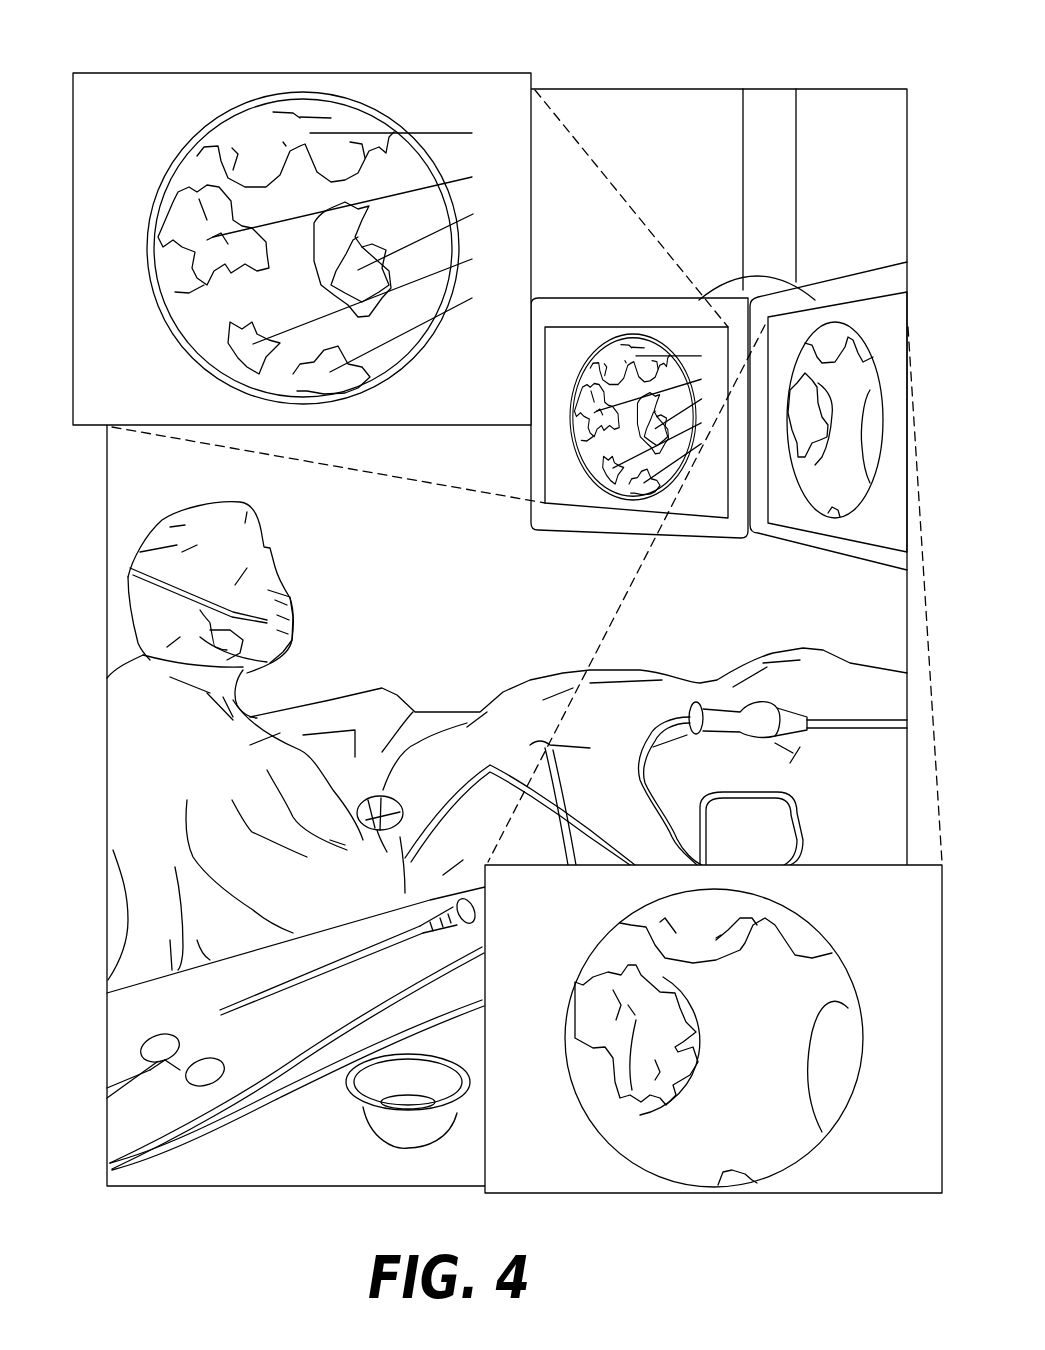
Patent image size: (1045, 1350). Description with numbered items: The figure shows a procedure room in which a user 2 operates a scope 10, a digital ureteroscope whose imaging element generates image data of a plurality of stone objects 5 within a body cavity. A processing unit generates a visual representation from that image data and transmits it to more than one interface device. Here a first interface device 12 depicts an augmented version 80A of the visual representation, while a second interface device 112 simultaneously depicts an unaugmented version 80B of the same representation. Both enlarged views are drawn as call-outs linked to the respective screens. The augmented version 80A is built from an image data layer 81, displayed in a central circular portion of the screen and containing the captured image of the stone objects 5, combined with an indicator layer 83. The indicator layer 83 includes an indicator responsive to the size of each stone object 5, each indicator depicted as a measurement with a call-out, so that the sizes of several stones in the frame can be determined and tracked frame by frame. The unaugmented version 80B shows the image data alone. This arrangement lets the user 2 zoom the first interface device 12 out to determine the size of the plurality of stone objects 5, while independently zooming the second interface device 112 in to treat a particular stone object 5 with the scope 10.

The user 2 is at (130, 728).
The stone object 5 is at (630, 1092).
The scope 10 is at (380, 798).
The interface device 12 is at (540, 518).
The second interface device 112 is at (888, 281).
The augmented version of visual representation 80A is at (129, 105).
The unaugmented version of visual representation 80B is at (873, 1158).
The image data layer 81 is at (170, 215).
The indicator layer 83 is at (484, 74).